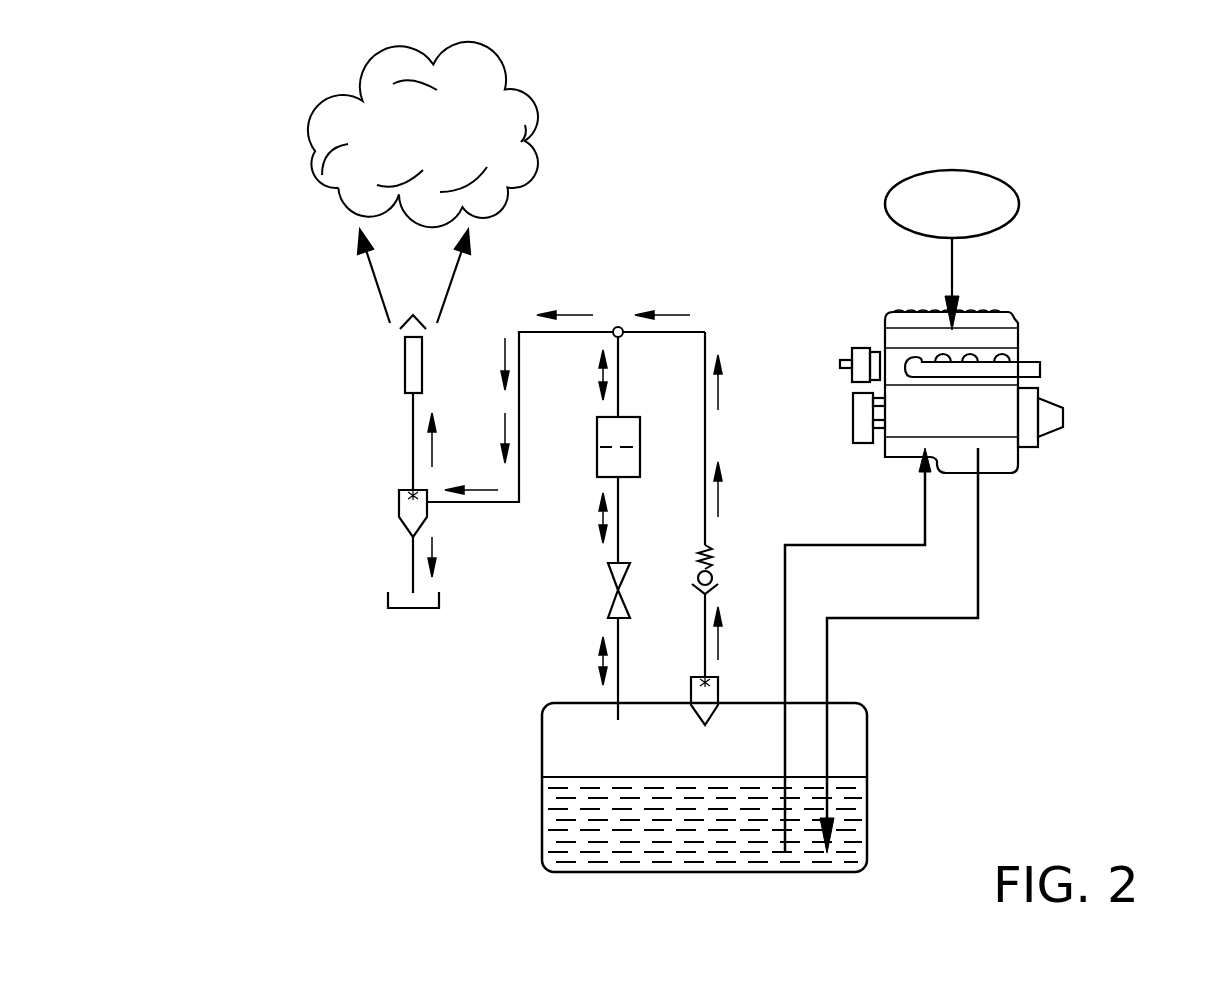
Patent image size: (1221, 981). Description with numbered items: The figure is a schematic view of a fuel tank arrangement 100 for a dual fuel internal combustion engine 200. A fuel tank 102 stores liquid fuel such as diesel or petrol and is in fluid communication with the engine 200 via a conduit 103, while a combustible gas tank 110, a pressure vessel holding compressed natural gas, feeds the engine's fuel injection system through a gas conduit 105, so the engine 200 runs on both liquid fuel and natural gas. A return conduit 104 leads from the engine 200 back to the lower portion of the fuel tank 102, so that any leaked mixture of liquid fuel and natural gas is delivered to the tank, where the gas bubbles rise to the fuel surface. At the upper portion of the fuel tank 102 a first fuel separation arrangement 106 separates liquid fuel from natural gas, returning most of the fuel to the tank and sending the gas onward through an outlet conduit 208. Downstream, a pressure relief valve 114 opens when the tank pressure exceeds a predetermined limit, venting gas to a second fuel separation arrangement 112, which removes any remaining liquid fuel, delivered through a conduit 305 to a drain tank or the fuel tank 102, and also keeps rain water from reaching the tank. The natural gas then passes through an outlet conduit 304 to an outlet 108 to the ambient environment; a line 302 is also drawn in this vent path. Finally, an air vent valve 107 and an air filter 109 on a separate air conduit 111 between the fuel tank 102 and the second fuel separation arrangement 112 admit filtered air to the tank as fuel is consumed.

The fuel tank arrangement 100 is at (282, 700).
The fuel tank 102 is at (867, 803).
The conduit 103 is at (927, 517).
The return conduit 104 is at (978, 502).
The gas conduit 105 is at (953, 267).
The first fuel separation arrangement 106 is at (718, 682).
The air vent valve 107 is at (610, 598).
The outlet to the ambient environment 108 is at (405, 360).
The air filter 109 is at (597, 452).
The combustible gas tank 110 is at (952, 169).
The air conduit 111 is at (618, 518).
The second fuel separation arrangement 112 is at (399, 505).
The pressure relief valve 114 is at (715, 572).
The dual fuel internal combustion engine 200 is at (1100, 340).
The outlet conduit 208 is at (707, 642).
The vapor line 302 is at (497, 502).
The outlet conduit 304 is at (413, 440).
The conduit 305 is at (413, 560).